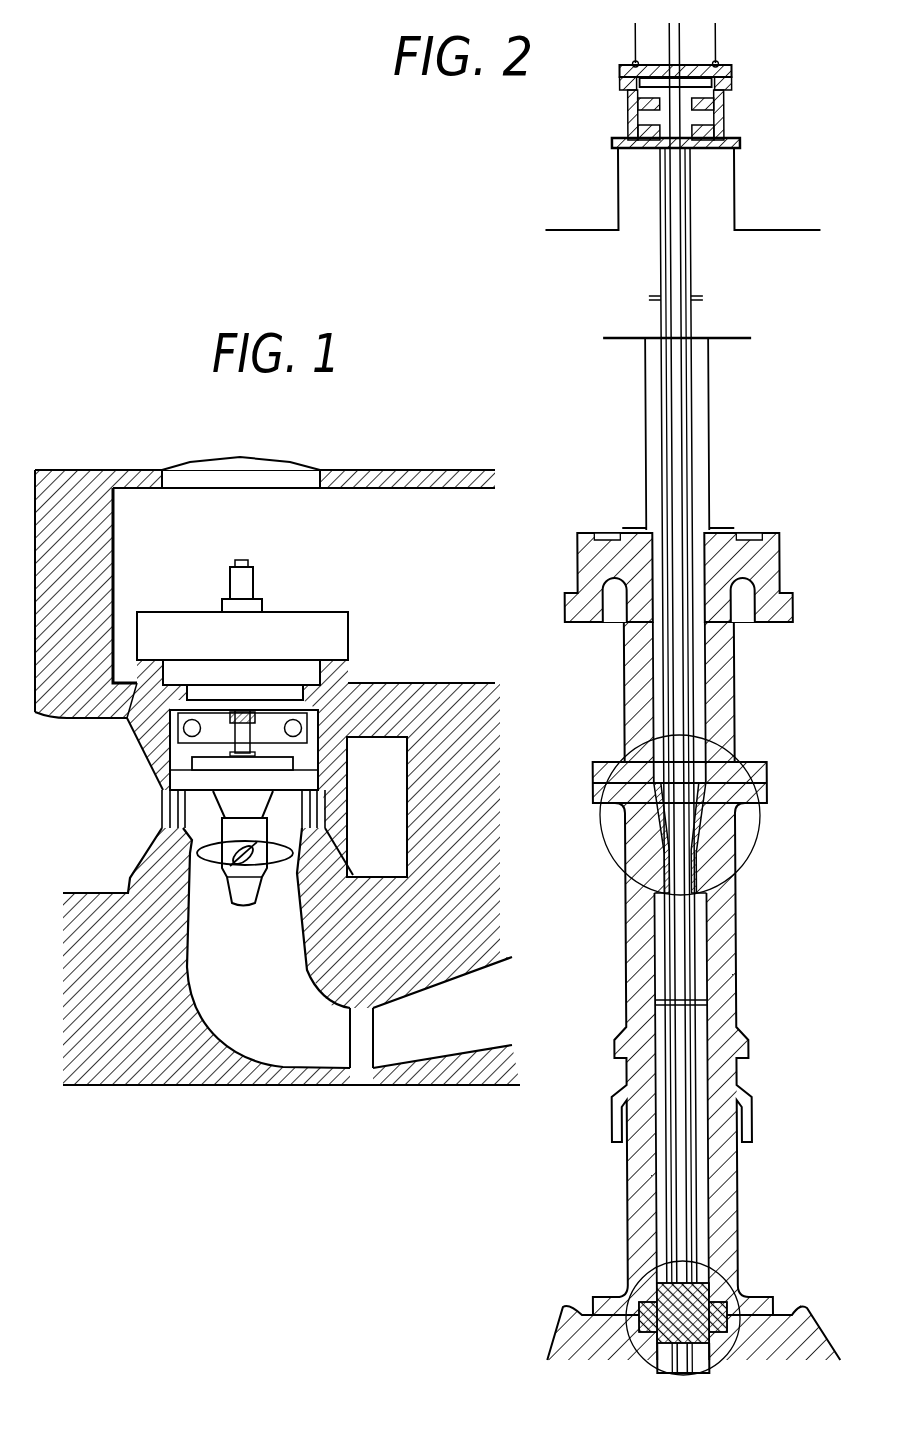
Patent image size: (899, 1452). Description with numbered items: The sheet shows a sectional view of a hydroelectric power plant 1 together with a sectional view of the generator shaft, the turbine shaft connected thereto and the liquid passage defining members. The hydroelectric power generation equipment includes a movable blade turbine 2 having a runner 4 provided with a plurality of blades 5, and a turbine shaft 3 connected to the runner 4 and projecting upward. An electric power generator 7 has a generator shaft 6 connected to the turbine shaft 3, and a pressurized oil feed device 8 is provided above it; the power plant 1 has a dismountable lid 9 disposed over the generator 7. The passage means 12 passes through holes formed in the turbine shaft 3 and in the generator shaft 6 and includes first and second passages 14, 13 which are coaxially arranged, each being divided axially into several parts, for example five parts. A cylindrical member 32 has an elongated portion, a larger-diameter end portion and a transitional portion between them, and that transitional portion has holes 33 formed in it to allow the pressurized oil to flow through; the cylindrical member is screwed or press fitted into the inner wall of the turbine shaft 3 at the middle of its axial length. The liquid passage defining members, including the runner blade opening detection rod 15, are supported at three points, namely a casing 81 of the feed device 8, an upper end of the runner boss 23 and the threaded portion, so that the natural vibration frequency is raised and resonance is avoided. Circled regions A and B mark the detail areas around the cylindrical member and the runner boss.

In FIG. 1, the hydroelectric power plant 1 is at (405, 486).
In FIG. 1, the movable blade turbine 2 is at (200, 770).
In FIG. 1, the turbine shaft 3 is at (238, 752).
In FIG. 2, the turbine shaft 3 is at (733, 952).
In FIG. 1, the runner 4 is at (243, 897).
In FIG. 1, the blades 5 is at (280, 851).
In FIG. 1, the generator shaft 6 is at (243, 705).
In FIG. 2, the generator shaft 6 is at (778, 560).
In FIG. 1, the electric power generator 7 is at (320, 630).
In FIG. 2, the electric power generator 7 is at (812, 230).
In FIG. 1, the pressurized oil feed device 8 is at (248, 581).
In FIG. 2, the pressurized oil feed device 8 is at (667, 85).
In FIG. 2, the casing of feed device 81 is at (628, 114).
In FIG. 1, the dismountable lid 9 is at (292, 463).
In FIG. 2, the passage means 12 is at (745, 698).
In FIG. 2, the second passage 13 is at (689, 266).
In FIG. 2, the first passage 14 is at (684, 248).
In FIG. 2, the runner blade opening detection rod 15 is at (676, 213).
In FIG. 2, the runner boss 23 is at (790, 1308).
In FIG. 2, the cylindrical member 32 is at (742, 766).
In FIG. 2, the holes 33 is at (702, 831).
In FIG. 2, the detail A is at (747, 855).
In FIG. 2, the detail B is at (722, 1268).